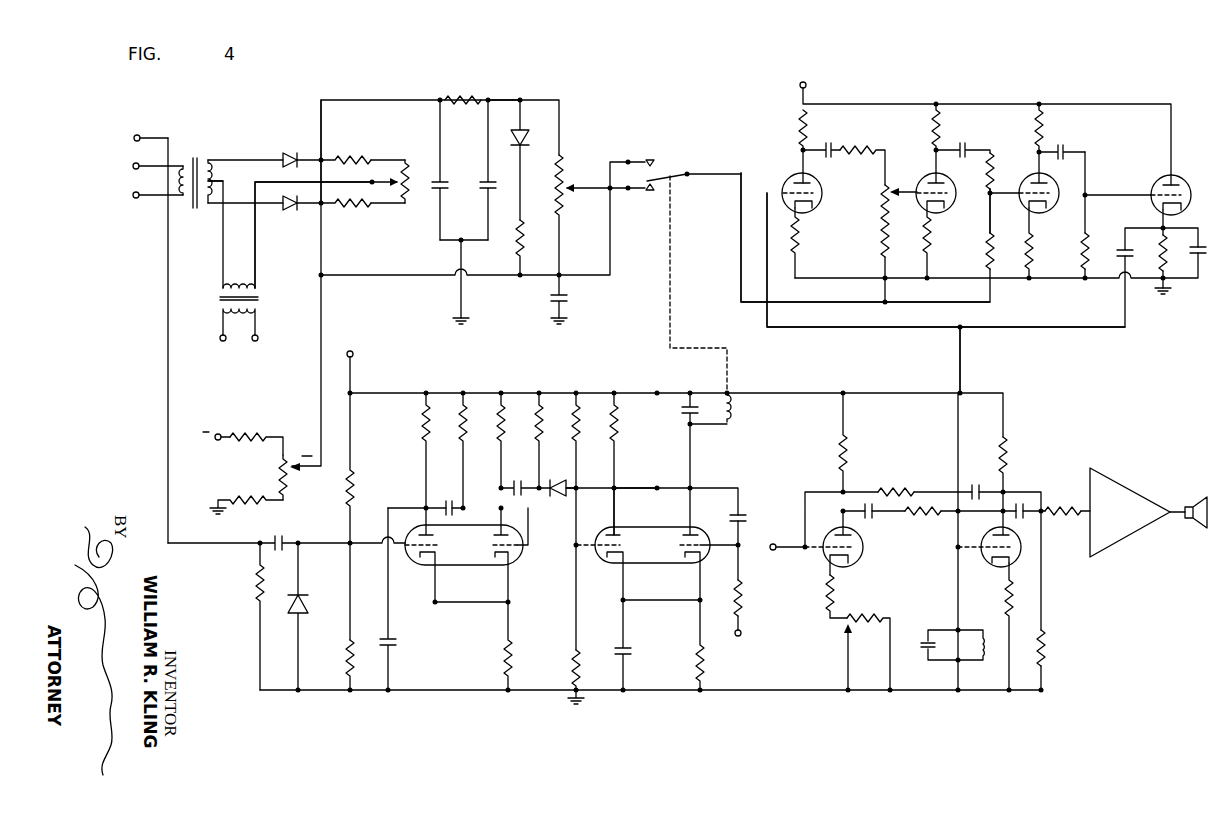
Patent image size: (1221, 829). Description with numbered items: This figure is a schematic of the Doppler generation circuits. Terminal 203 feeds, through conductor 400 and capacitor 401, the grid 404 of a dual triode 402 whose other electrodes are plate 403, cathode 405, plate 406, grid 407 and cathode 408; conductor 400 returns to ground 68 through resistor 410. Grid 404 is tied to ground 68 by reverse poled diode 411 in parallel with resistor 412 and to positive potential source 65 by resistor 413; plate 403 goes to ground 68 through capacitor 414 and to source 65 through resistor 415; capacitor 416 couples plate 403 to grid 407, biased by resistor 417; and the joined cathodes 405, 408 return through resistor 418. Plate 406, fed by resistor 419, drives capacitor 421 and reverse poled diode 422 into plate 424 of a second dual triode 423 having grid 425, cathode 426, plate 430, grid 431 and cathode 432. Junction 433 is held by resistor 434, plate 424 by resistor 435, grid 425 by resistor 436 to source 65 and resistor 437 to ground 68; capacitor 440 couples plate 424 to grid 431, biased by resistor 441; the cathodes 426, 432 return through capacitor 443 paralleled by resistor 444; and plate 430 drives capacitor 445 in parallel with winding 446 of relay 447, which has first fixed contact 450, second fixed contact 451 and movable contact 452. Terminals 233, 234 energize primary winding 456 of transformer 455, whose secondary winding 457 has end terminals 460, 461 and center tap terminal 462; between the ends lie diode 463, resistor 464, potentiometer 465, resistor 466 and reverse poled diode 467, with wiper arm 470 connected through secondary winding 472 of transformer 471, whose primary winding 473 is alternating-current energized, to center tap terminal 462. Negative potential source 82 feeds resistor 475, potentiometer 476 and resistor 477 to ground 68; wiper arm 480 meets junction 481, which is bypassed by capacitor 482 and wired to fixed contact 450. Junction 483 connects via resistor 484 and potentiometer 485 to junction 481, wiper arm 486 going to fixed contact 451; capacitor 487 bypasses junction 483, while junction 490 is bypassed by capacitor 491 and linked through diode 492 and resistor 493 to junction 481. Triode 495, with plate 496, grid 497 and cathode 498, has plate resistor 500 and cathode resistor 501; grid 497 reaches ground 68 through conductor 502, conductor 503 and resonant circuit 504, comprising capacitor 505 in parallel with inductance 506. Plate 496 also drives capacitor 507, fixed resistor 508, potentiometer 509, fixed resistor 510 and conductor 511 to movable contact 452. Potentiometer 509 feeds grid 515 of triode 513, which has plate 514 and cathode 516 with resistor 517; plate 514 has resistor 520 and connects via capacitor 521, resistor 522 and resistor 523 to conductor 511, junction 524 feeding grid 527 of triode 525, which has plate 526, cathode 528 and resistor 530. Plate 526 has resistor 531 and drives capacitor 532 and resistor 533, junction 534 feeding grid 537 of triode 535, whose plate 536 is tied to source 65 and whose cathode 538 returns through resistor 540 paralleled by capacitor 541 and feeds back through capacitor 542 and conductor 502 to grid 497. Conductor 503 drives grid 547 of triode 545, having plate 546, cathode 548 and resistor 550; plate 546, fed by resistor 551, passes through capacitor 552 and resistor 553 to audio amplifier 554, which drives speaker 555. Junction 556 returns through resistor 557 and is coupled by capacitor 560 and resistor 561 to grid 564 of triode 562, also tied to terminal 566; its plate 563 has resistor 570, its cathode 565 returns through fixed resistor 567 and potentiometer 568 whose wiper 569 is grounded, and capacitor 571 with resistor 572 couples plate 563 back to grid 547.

The ground 68 is at (1164, 296).
The positive potential source 65 is at (806, 86).
The negative potential source 82 is at (218, 434).
The terminal 203 is at (138, 137).
The terminal 233 is at (133, 194).
The terminal 234 is at (133, 165).
The conductor 400 is at (171, 369).
The capacitor 401 is at (282, 542).
The dual triode 402 is at (464, 557).
The plate 403 is at (418, 534).
The grid 404 is at (414, 554).
The cathode 405 is at (432, 572).
The plate 406 is at (492, 535).
The grid 407 is at (490, 546).
The cathode 408 is at (516, 554).
The resistor 410 is at (254, 582).
The reverse poled diode 411 is at (304, 616).
The resistor 412 is at (347, 655).
The resistor 413 is at (354, 479).
The capacitor 414 is at (398, 648).
The resistor 415 is at (422, 418).
The capacitor 416 is at (446, 501).
The resistor 417 is at (459, 424).
The resistor 418 is at (529, 646).
The resistor 419 is at (496, 438).
The capacitor 421 is at (516, 479).
The reverse poled diode 422 is at (558, 478).
The dual triode 423 is at (596, 550).
The plate 424 is at (602, 532).
The grid 425 is at (634, 517).
The cathode 426 is at (618, 564).
The plate 430 is at (682, 530).
The grid 431 is at (682, 548).
The cathode 432 is at (686, 560).
The junction 433 is at (546, 495).
The resistor 434 is at (536, 434).
The resistor 435 is at (610, 439).
The resistor 436 is at (570, 425).
The resistor 437 is at (554, 670).
The capacitor 440 is at (743, 518).
The resistor 441 is at (745, 597).
The capacitor 443 is at (626, 650).
The resistor 444 is at (696, 658).
The capacitor 445 is at (682, 400).
The winding 446 is at (732, 408).
The relay 447 is at (679, 284).
The first fixed contact 450 is at (648, 158).
The second fixed contact 451 is at (640, 194).
The movable contact 452 is at (687, 172).
The transformer 455 is at (195, 168).
The primary winding 456 is at (209, 203).
The secondary winding 457 is at (231, 172).
The end terminal 460 is at (218, 158).
The end terminal 461 is at (210, 208).
The center tap terminal 462 is at (312, 225).
The diode 463 is at (286, 153).
The resistor 464 is at (352, 157).
The potentiometer 465 is at (406, 159).
The resistor 466 is at (356, 208).
The reverse poled diode 467 is at (288, 208).
The wiper arm 470 is at (393, 179).
The transformer 471 is at (259, 296).
The secondary winding 472 is at (224, 288).
The primary winding 473 is at (228, 315).
The resistor 475 is at (250, 434).
The potentiometer 476 is at (280, 467).
The resistor 477 is at (253, 498).
The wiper arm 480 is at (297, 471).
The junction 481 is at (322, 206).
The capacitor 482 is at (564, 296).
The junction 483 is at (321, 162).
The resistor 484 is at (446, 98).
The potentiometer 485 is at (568, 158).
The wiper arm 486 is at (571, 193).
The capacitor 487 is at (444, 184).
The junction 490 is at (518, 98).
The capacitor 491 is at (484, 192).
The diode 492 is at (538, 130).
The resistor 493 is at (518, 242).
The triode 495 is at (784, 191).
The plate 496 is at (809, 182).
The grid 497 is at (816, 189).
The cathode 498 is at (811, 208).
The resistor 500 is at (792, 128).
The resistor 501 is at (794, 252).
The conductor 502 is at (1023, 323).
The conductor 503 is at (971, 363).
The resonant circuit 504 is at (956, 645).
The capacitor 505 is at (924, 641).
The inductance 506 is at (984, 664).
The capacitor 507 is at (834, 142).
The fixed resistor 508 is at (865, 150).
The potentiometer 509 is at (882, 204).
The fixed resistor 510 is at (882, 238).
The conductor 511 is at (852, 308).
The triode 513 is at (947, 211).
The plate 514 is at (941, 168).
The grid 515 is at (944, 188).
The cathode 516 is at (902, 195).
The resistor 517 is at (929, 244).
The resistor 520 is at (940, 128).
The capacitor 521 is at (969, 148).
The resistor 522 is at (994, 180).
The resistor 523 is at (984, 242).
The junction 524 is at (992, 198).
The triode 525 is at (1042, 210).
The plate 526 is at (1041, 181).
The grid 527 is at (1050, 198).
The cathode 528 is at (1038, 220).
The resistor 530 is at (1036, 256).
The resistor 531 is at (1047, 128).
The capacitor 532 is at (1074, 150).
The resistor 533 is at (1102, 244).
The junction 534 is at (1088, 194).
The triode 535 is at (1180, 208).
The plate 536 is at (1174, 175).
The grid 537 is at (1178, 186).
The cathode 538 is at (1156, 198).
The resistor 540 is at (1180, 250).
The capacitor 541 is at (1205, 270).
The capacitor 542 is at (1124, 256).
The triode 545 is at (1004, 588).
The plate 546 is at (992, 517).
The grid 547 is at (1021, 562).
The cathode 548 is at (996, 566).
The resistor 550 is at (1008, 611).
The resistor 551 is at (1008, 450).
The capacitor 552 is at (1028, 550).
The resistor 553 is at (1056, 503).
The audio amplifier 554 is at (1144, 497).
The speaker 555 is at (1192, 496).
The junction 556 is at (1024, 517).
The resistor 557 is at (1057, 648).
The capacitor 560 is at (974, 484).
The resistor 561 is at (880, 479).
The triode 562 is at (824, 559).
The plate 563 is at (834, 530).
The grid 564 is at (863, 548).
The cathode 565 is at (850, 560).
The terminal 566 is at (771, 544).
The fixed resistor 567 is at (836, 596).
The potentiometer 568 is at (858, 634).
The wiper 569 is at (844, 630).
The resistor 570 is at (850, 440).
The capacitor 571 is at (870, 519).
The resistor 572 is at (920, 517).